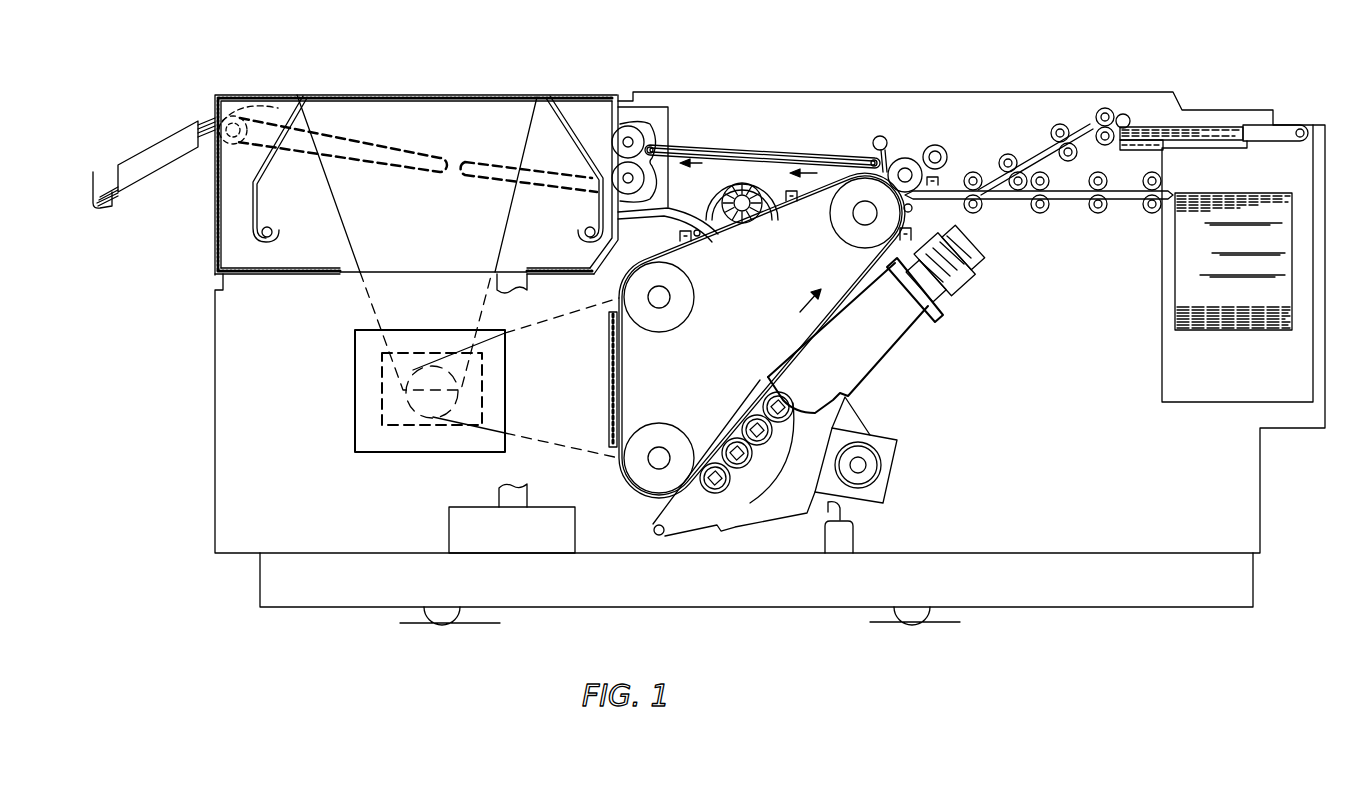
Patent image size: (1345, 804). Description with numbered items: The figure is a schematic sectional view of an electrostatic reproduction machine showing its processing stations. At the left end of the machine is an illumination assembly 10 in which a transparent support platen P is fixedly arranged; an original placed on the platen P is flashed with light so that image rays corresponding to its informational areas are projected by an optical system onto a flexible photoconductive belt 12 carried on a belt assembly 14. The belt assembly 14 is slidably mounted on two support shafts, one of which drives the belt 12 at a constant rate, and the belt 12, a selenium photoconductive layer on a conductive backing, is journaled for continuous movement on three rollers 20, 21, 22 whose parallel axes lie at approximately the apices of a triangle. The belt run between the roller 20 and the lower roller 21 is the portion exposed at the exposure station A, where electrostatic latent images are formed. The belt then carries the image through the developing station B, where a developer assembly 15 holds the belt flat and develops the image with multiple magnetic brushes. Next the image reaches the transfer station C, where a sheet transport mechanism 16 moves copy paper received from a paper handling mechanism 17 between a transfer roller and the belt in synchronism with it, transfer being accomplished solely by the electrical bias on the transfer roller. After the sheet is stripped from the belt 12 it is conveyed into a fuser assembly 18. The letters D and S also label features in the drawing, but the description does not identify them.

The illumination assembly 10 is at (207, 223).
The photoconductive belt 12 is at (610, 350).
The belt assembly 14 is at (654, 376).
The developer assembly 15 is at (870, 384).
The sheet transport mechanism 16 is at (1306, 110).
The paper handling mechanism 17 is at (1086, 107).
The fuser assembly 18 is at (681, 121).
The roller 20 is at (683, 278).
The lower roller 21 is at (663, 437).
The roller 22 is at (840, 216).
The document hopper D is at (370, 90).
The platen P is at (517, 100).
The exposure station A is at (604, 375).
The developing station B is at (738, 430).
The transfer station C is at (928, 218).
The sensor S is at (951, 207).